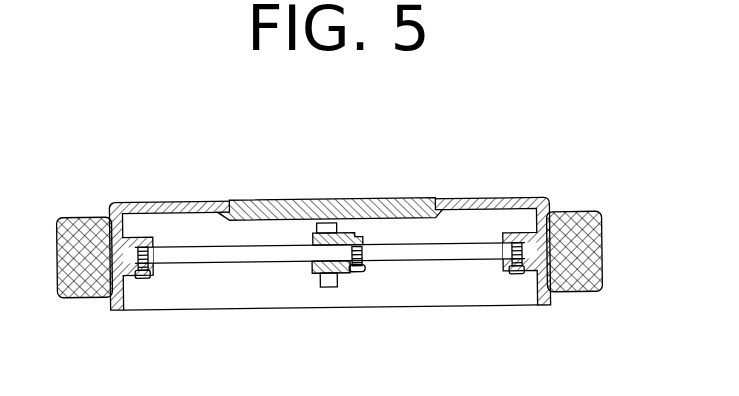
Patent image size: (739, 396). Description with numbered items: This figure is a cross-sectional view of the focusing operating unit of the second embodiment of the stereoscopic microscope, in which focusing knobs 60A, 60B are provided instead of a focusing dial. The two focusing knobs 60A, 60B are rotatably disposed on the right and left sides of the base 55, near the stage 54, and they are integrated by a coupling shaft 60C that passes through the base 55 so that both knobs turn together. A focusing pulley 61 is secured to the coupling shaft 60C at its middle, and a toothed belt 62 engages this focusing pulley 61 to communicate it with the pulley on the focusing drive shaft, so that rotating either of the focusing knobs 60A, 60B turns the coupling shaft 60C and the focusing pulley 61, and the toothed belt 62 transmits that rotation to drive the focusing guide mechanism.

The stage 54 is at (285, 200).
The base 55 is at (183, 201).
The focusing knob 60A is at (82, 298).
The focusing knob 60B is at (570, 212).
The coupling shaft 60C is at (203, 258).
The focusing pulley 61 is at (312, 268).
The toothed belt 62 is at (330, 290).